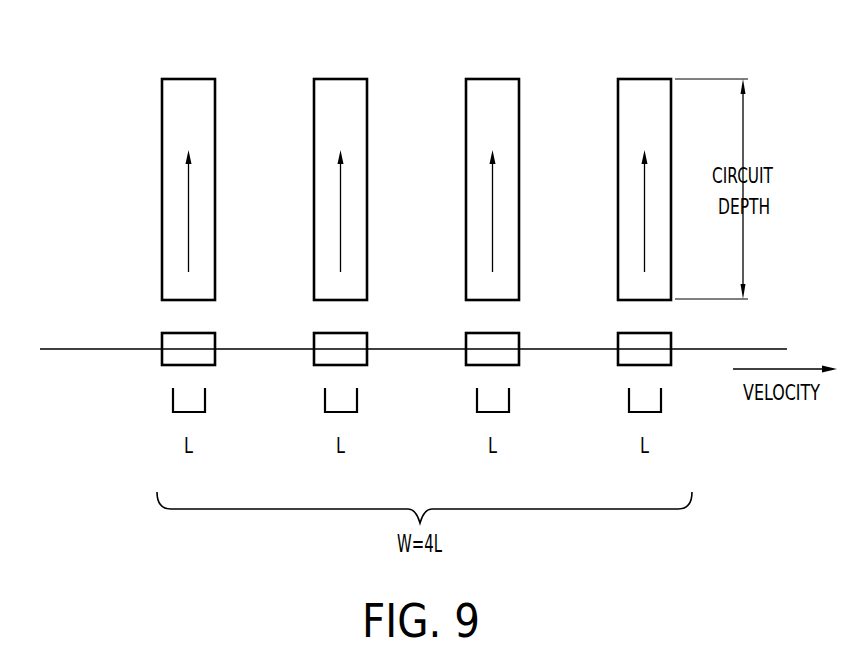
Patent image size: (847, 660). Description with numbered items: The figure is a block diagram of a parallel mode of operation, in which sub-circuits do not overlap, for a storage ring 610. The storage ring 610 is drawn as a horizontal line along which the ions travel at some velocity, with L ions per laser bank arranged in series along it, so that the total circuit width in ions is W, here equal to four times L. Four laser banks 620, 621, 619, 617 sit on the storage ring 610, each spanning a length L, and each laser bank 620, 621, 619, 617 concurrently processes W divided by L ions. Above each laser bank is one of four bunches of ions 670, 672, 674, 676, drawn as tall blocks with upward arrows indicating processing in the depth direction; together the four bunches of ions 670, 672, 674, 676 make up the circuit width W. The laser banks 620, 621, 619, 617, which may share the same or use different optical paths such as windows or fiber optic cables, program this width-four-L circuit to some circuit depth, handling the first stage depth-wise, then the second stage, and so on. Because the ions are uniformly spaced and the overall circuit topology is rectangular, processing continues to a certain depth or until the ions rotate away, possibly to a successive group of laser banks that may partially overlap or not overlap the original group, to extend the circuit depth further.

The storage ring 610 is at (112, 349).
The laser bank 617 is at (618, 362).
The laser bank 619 is at (466, 362).
The laser bank 620 is at (162, 362).
The laser bank 621 is at (314, 362).
The bunch of ions 670 is at (188, 79).
The bunch of ions 672 is at (340, 79).
The bunch of ions 674 is at (492, 79).
The bunch of ions 676 is at (644, 79).